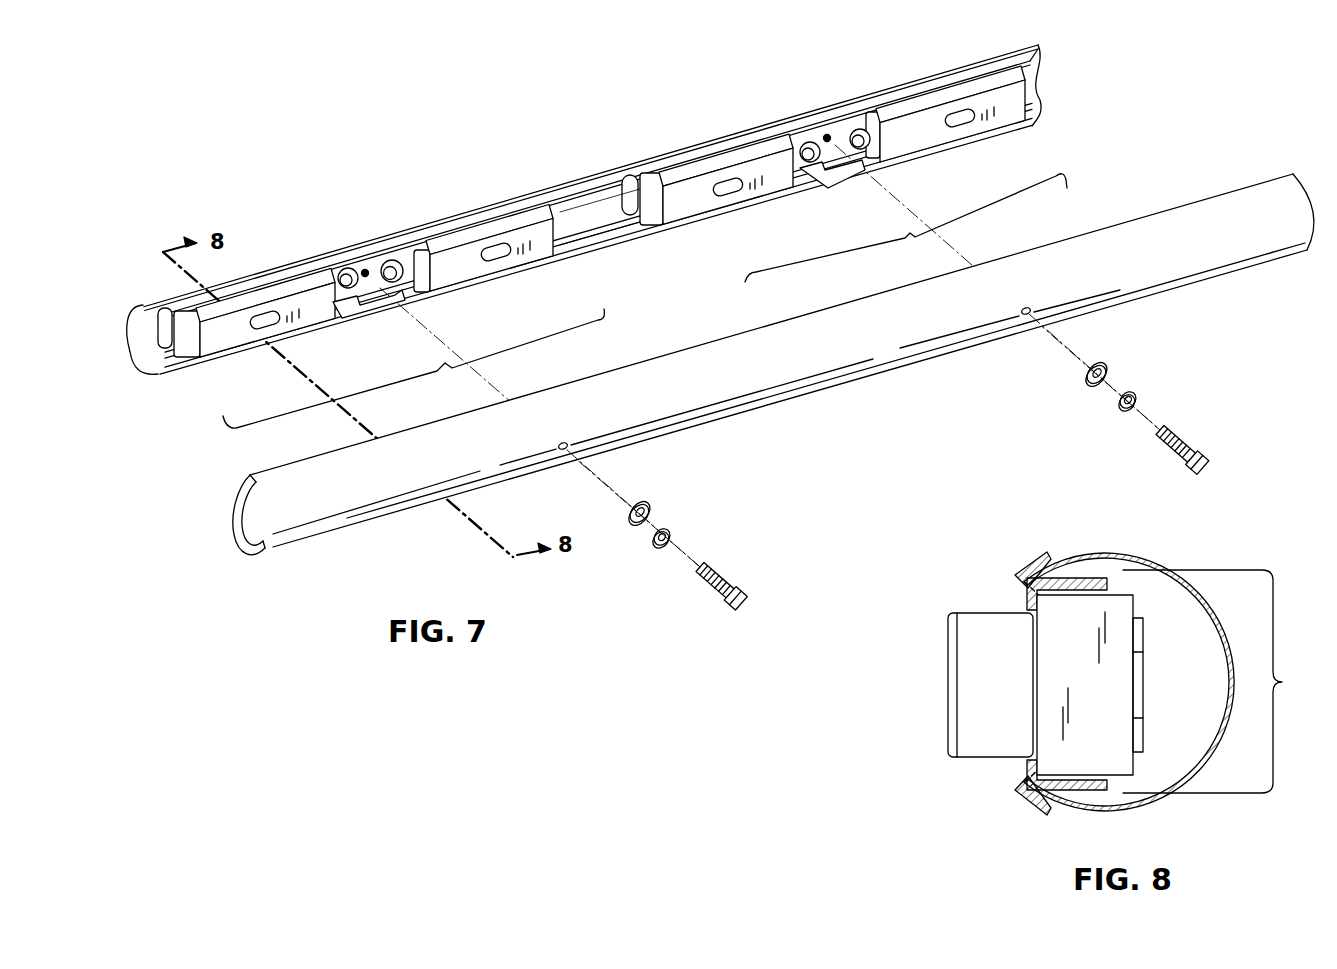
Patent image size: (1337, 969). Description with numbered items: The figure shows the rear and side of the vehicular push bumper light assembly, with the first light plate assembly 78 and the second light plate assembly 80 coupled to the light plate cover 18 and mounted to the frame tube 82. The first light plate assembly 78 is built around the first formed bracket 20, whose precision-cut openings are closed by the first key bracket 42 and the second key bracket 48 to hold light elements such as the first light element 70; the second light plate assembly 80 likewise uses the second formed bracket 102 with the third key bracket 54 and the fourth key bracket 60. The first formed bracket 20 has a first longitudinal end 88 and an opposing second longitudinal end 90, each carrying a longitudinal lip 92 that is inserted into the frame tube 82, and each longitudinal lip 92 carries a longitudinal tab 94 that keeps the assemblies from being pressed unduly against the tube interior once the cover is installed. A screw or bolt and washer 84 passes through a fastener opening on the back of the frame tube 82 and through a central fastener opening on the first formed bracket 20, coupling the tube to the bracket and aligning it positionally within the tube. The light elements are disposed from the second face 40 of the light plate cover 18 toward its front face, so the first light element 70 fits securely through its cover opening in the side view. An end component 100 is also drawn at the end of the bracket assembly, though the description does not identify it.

In FIG. 8, the light plate cover 18 is at (988, 598).
In FIG. 7, the first formed bracket 20 is at (932, 92).
In FIG. 7, the second face 40 is at (600, 222).
In FIG. 7, the first key bracket 42 is at (1003, 118).
In FIG. 7, the second key bracket 48 is at (685, 204).
In FIG. 7, the third key bracket 54 is at (540, 248).
In FIG. 7, the fourth key bracket 60 is at (313, 314).
In FIG. 8, the first light element 70 is at (965, 758).
In FIG. 7, the first light plate assembly 78 is at (906, 228).
In FIG. 8, the first light plate assembly 78 is at (1218, 681).
In FIG. 7, the second light plate assembly 80 is at (413, 368).
In FIG. 7, the frame tube 82 is at (835, 378).
In FIG. 8, the frame tube 82 is at (1157, 563).
In FIG. 7, the bolt 84 is at (718, 565).
In FIG. 8, the first longitudinal end 88 is at (1018, 573).
In FIG. 8, the second longitudinal end 90 is at (1028, 773).
In FIG. 8, the longitudinal lip 92 is at (1082, 578).
In FIG. 7, the longitudinal tab 94 is at (380, 258).
In FIG. 7, the end cap 100 is at (163, 327).
In FIG. 7, the second formed bracket 102 is at (493, 217).